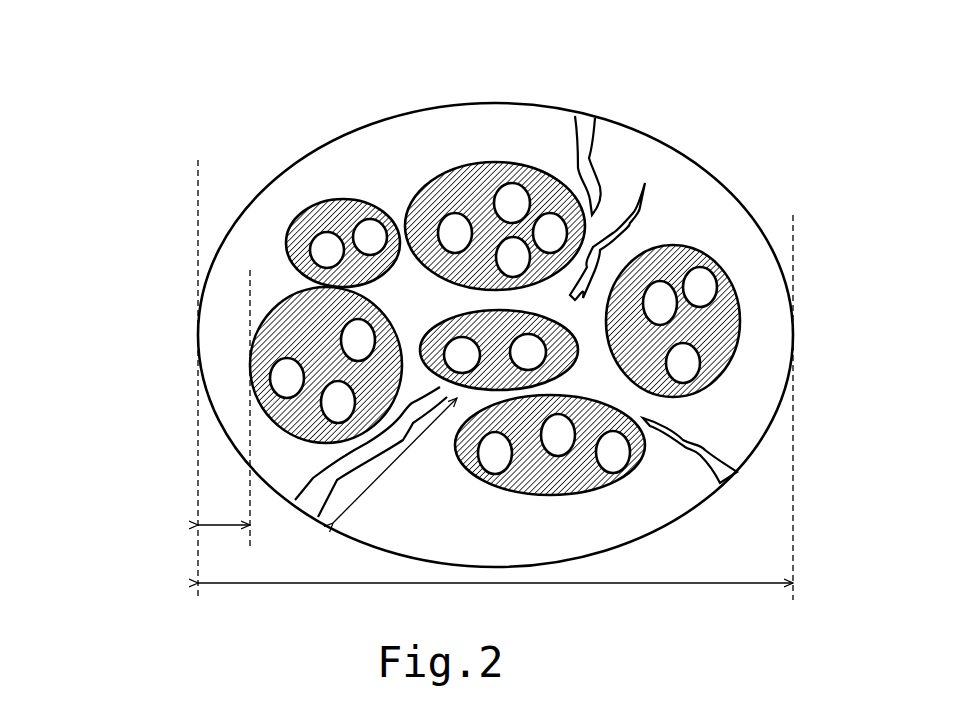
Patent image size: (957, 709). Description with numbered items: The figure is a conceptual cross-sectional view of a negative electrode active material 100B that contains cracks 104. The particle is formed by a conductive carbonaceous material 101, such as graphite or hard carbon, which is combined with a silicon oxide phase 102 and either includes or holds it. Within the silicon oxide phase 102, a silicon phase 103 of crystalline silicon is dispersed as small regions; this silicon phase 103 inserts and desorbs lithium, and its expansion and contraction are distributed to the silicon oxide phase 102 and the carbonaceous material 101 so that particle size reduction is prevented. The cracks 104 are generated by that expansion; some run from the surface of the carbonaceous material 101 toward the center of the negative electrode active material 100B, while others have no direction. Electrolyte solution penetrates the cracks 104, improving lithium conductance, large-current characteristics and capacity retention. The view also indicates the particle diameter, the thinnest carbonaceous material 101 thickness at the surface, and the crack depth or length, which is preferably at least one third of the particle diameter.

The negative electrode active material 100B is at (175, 46).
The carbonaceous material 101 is at (340, 173).
The silicon oxide phase 102 is at (492, 172).
The silicon phase 103 is at (702, 275).
The crack 104 is at (588, 135).